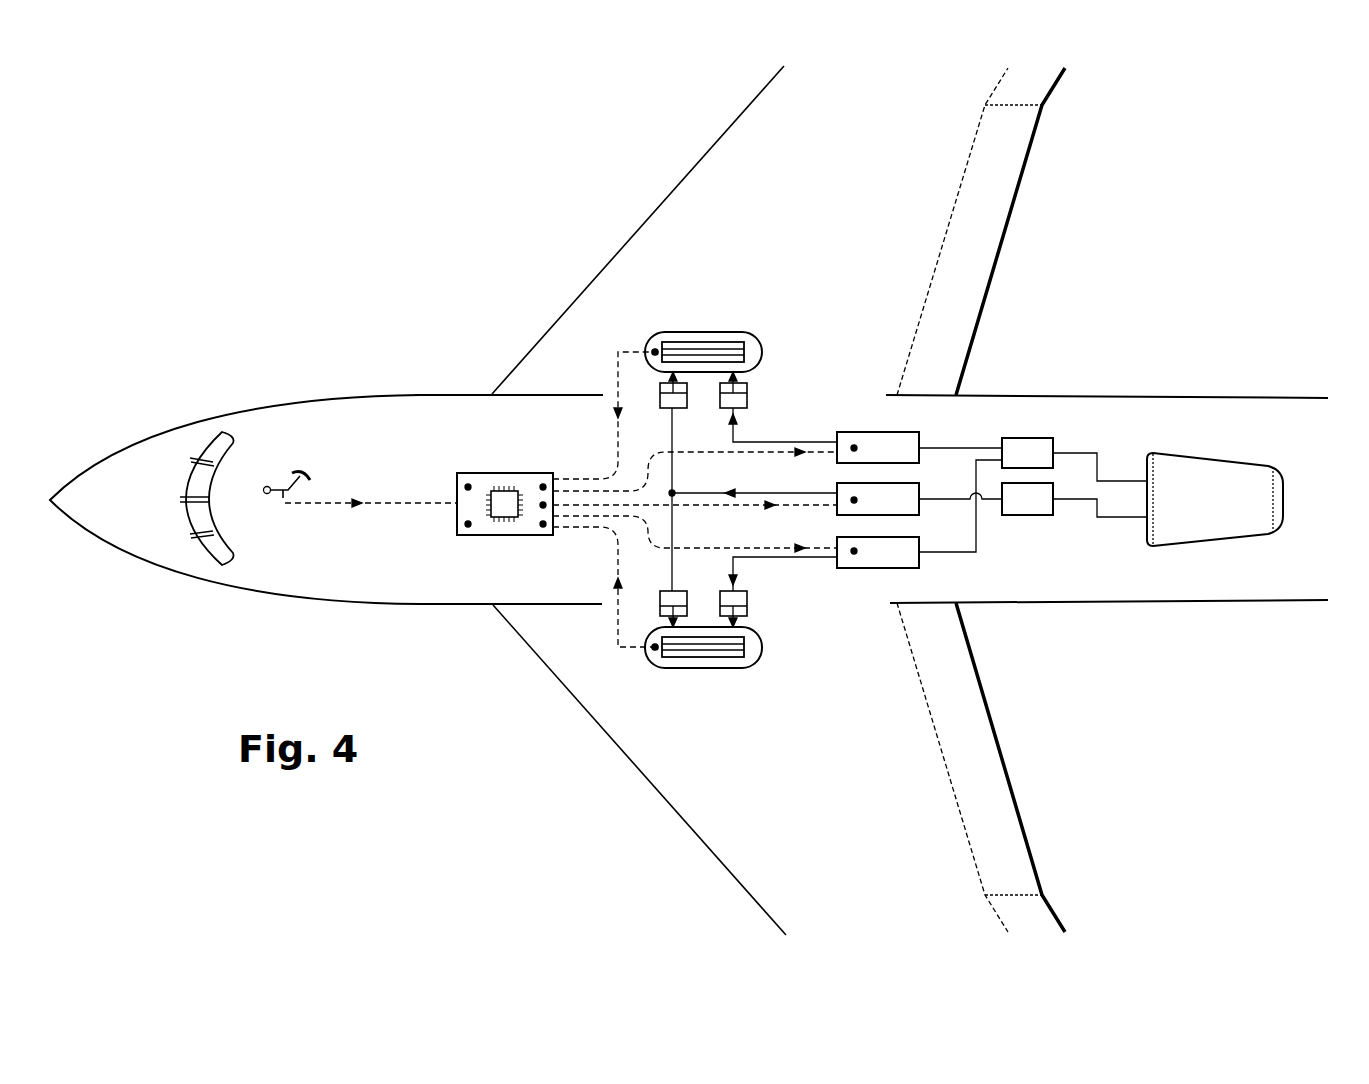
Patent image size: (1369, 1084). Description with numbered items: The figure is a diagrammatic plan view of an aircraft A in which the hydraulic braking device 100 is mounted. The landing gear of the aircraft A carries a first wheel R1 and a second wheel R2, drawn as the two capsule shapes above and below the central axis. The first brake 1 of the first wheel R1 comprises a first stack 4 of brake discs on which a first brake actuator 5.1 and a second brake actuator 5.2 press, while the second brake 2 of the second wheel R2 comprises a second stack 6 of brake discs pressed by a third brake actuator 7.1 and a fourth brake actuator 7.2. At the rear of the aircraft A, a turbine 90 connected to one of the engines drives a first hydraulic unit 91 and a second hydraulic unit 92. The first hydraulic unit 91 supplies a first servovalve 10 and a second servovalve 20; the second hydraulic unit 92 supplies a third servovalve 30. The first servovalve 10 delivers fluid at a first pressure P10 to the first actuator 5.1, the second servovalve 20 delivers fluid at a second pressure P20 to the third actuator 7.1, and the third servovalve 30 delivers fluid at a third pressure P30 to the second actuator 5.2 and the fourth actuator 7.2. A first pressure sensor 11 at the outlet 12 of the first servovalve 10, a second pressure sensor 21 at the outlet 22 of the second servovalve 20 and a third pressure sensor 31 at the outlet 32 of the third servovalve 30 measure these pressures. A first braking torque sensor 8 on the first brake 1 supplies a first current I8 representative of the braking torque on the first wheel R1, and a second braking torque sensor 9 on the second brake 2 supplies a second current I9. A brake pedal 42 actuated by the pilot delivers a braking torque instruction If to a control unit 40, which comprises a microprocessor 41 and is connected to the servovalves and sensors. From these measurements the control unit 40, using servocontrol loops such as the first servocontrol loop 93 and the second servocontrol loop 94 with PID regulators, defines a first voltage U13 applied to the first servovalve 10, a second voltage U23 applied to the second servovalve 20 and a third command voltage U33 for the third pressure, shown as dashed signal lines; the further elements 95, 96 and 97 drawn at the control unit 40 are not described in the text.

The hydraulic braking device 100 is at (420, 446).
The brake pedal 42 is at (301, 476).
The braking torque instruction If is at (371, 491).
The control unit 40 is at (498, 510).
The microprocessor 41 is at (492, 490).
The first servocontrol loop 93 is at (457, 487).
The second servocontrol loop 94 is at (457, 524).
The control unit output 95 is at (543, 484).
The control unit output 96 is at (543, 528).
The control unit output 97 is at (553, 526).
The first brake 1 is at (687, 343).
The second brake 2 is at (687, 661).
The first stack of brake discs 4 is at (733, 341).
The second stack of brake discs 6 is at (733, 658).
The first braking torque sensor 8 is at (654, 356).
The second braking torque sensor 9 is at (654, 643).
The first wheel R1 is at (647, 343).
The second wheel R2 is at (647, 658).
The first current I8 is at (602, 415).
The second current I9 is at (602, 587).
The first brake actuator 5.1 is at (728, 409).
The second brake actuator 5.2 is at (665, 409).
The third brake actuator 7.1 is at (728, 590).
The fourth brake actuator 7.2 is at (665, 590).
The first pressure P10 is at (783, 425).
The second pressure P20 is at (783, 574).
The third pressure P30 is at (754, 481).
The first voltage U13 is at (800, 448).
The second voltage U23 is at (803, 553).
The control signal to third energy source U33 is at (768, 508).
The first servovalve 10 is at (865, 422).
The first pressure sensor 11 is at (855, 444).
The outlet of the first servovalve 12 is at (835, 438).
The second servovalve 20 is at (865, 577).
The second pressure sensor 21 is at (855, 556).
The outlet of the second servovalve 22 is at (835, 566).
The third servovalve 30 is at (850, 502).
The third pressure sensor 31 is at (852, 504).
The outlet of the third servovalve 32 is at (836, 493).
The first hydraulic unit 91 is at (1027, 453).
The second hydraulic unit 92 is at (1027, 499).
The turbine 90 is at (1232, 476).
The aircraft A is at (1320, 376).